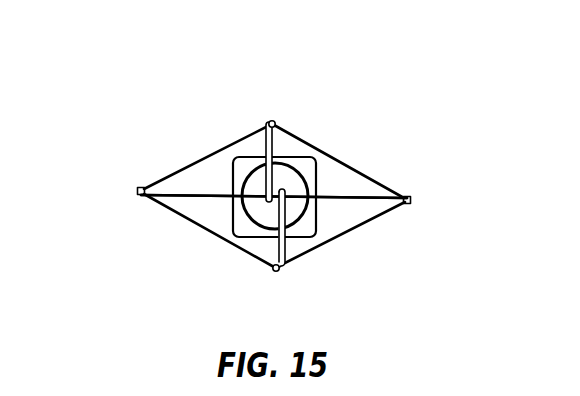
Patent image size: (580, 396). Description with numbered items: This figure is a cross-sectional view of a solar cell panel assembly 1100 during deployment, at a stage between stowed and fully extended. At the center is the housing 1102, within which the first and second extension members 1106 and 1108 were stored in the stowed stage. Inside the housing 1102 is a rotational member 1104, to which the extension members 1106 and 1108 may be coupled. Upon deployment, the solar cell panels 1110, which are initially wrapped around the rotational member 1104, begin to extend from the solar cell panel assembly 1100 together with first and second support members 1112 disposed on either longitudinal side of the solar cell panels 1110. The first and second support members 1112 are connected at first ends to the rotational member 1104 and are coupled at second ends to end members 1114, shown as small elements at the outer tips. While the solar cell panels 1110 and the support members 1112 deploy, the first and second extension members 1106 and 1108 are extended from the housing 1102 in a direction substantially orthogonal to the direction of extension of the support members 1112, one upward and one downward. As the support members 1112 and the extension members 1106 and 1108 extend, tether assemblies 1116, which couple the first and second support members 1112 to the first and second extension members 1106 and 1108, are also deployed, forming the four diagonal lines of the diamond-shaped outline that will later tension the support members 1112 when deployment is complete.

The solar cell panel assembly 1100 is at (377, 59).
The housing 1102 is at (316, 157).
The rotational member 1104 is at (302, 222).
The first extension member 1106 is at (270, 120).
The second extension member 1108 is at (272, 272).
The solar cell panels 1110 is at (212, 195).
The first and second support members 1112 is at (195, 197).
The end members 1114 is at (140, 189).
The tether assemblies 1116 is at (227, 148).